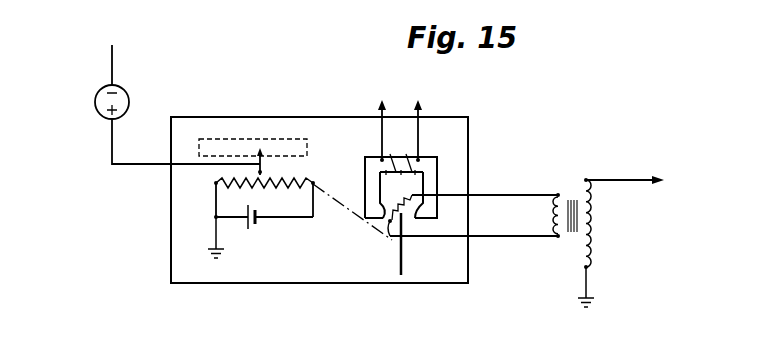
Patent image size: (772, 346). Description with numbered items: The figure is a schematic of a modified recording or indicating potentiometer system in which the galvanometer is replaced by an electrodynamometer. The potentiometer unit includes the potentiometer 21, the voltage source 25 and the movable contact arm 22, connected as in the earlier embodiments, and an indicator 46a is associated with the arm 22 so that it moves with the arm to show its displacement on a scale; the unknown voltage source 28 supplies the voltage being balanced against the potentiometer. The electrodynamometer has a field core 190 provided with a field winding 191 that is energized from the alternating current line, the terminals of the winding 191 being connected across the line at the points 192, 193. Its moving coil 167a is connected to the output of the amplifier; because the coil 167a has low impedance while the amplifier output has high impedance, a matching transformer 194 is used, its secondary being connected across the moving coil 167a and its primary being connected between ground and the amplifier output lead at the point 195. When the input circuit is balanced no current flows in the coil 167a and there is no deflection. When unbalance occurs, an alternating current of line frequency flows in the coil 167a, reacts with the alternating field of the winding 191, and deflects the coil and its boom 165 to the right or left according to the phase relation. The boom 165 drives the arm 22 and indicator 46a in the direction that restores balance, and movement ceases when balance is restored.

The unknown voltage source 28 is at (95, 102).
The indicator 46a is at (263, 157).
The movable contact arm 22 is at (258, 172).
The potentiometer 21 is at (233, 184).
The voltage source 25 is at (252, 229).
The field core 190 is at (365, 157).
The field winding 191 is at (408, 155).
The connection point 192 is at (381, 101).
The connection point 193 is at (422, 102).
The moving coil 167a is at (392, 238).
The boom 165 is at (402, 262).
The matching transformer 194 is at (571, 198).
The amplifier output point 195 is at (628, 176).